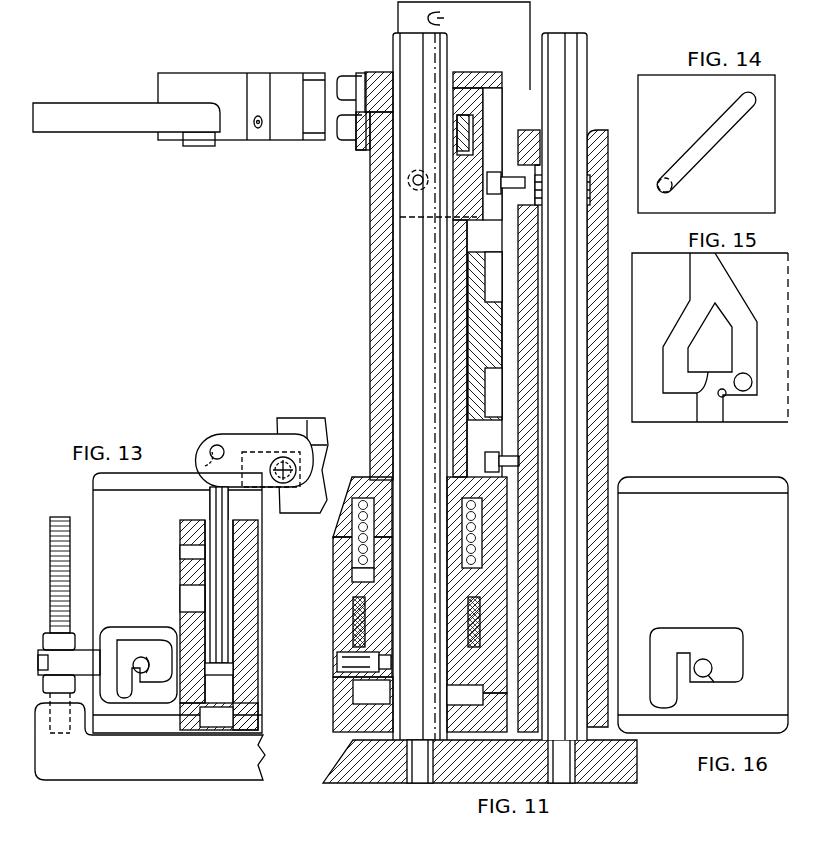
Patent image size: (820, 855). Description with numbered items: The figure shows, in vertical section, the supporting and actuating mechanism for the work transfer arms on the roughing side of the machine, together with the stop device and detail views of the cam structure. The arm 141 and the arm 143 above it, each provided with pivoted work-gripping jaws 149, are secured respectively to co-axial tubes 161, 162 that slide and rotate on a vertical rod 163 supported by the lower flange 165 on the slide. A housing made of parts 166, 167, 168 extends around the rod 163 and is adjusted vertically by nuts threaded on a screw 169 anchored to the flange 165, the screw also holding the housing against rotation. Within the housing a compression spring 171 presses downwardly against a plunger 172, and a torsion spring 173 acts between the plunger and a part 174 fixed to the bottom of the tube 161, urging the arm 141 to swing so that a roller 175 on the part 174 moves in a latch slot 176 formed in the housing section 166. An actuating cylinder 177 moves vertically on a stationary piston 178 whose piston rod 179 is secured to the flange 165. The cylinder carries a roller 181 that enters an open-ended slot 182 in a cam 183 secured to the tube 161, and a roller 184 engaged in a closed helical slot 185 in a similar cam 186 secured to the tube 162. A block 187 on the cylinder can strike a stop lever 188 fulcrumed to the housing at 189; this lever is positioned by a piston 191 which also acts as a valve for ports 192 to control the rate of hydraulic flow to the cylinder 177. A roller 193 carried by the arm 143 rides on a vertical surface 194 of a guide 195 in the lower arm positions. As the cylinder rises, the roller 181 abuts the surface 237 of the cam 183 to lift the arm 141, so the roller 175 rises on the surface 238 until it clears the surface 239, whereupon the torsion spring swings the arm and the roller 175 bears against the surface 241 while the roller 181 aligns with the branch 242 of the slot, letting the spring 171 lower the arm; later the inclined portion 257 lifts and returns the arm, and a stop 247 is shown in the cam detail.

In FIG. 11, the arm 141 is at (350, 153).
In FIG. 11, the arm 143 is at (350, 77).
In FIG. 11, the jaws 149 is at (93, 122).
In FIG. 11, the tube 161 is at (375, 270).
In FIG. 11, the tube 162 is at (388, 283).
In FIG. 11, the vertical rod 163 is at (412, 313).
In FIG. 11, the lower flange 165 is at (392, 780).
In FIG. 13, the lower flange 165 is at (173, 772).
In FIG. 11, the housing section 166 is at (343, 597).
In FIG. 13, the housing section 166 is at (152, 550).
In FIG. 16, the housing section 166 is at (682, 543).
In FIG. 11, the housing part 167 is at (365, 473).
In FIG. 11, the housing part 168 is at (347, 720).
In FIG. 13, the screw 169 is at (55, 598).
In FIG. 11, the compression spring 171 is at (358, 553).
In FIG. 11, the plunger 172 is at (360, 578).
In FIG. 11, the torsion spring 173 is at (355, 627).
In FIG. 11, the part 174 is at (380, 662).
In FIG. 11, the roller 175 is at (345, 662).
In FIG. 13, the roller 175 is at (133, 674).
In FIG. 16, the roller 175 is at (716, 676).
In FIG. 13, the latch slot 176 is at (160, 633).
In FIG. 16, the latch slot 176 is at (740, 660).
In FIG. 11, the actuating cylinder 177 is at (604, 446).
In FIG. 11, the stationary piston 178 is at (590, 222).
In FIG. 11, the piston rod 179 is at (577, 326).
In FIG. 11, the roller 181 is at (484, 462).
In FIG. 15, the roller 181 is at (752, 369).
In FIG. 15, the open-ended slot 182 is at (710, 417).
In FIG. 11, the cam 183 is at (492, 282).
In FIG. 15, the cam 183 is at (672, 285).
In FIG. 11, the roller 184 is at (490, 172).
In FIG. 14, the roller 184 is at (688, 178).
In FIG. 14, the closed helical slot 185 is at (717, 143).
In FIG. 11, the cam 186 is at (493, 207).
In FIG. 14, the cam 186 is at (683, 115).
In FIG. 11, the block 187 is at (308, 433).
In FIG. 11, the stop lever 188 is at (535, 3).
In FIG. 11, the fulcrum 189 is at (283, 483).
In FIG. 13, the piston 191 is at (235, 650).
In FIG. 13, the ports 192 is at (180, 627).
In FIG. 11, the roller 193 is at (392, 198).
In FIG. 11, the vertical surface 194 is at (444, 18).
In FIG. 11, the guide 195 is at (513, 58).
In FIG. 15, the surface 237 is at (690, 393).
In FIG. 16, the surface 238 is at (692, 660).
In FIG. 16, the surface 239 is at (672, 645).
In FIG. 16, the surface 241 is at (660, 645).
In FIG. 15, the branch 242 is at (737, 320).
In FIG. 15, the stop 247 is at (726, 397).
In FIG. 15, the inclined portion 257 is at (724, 292).